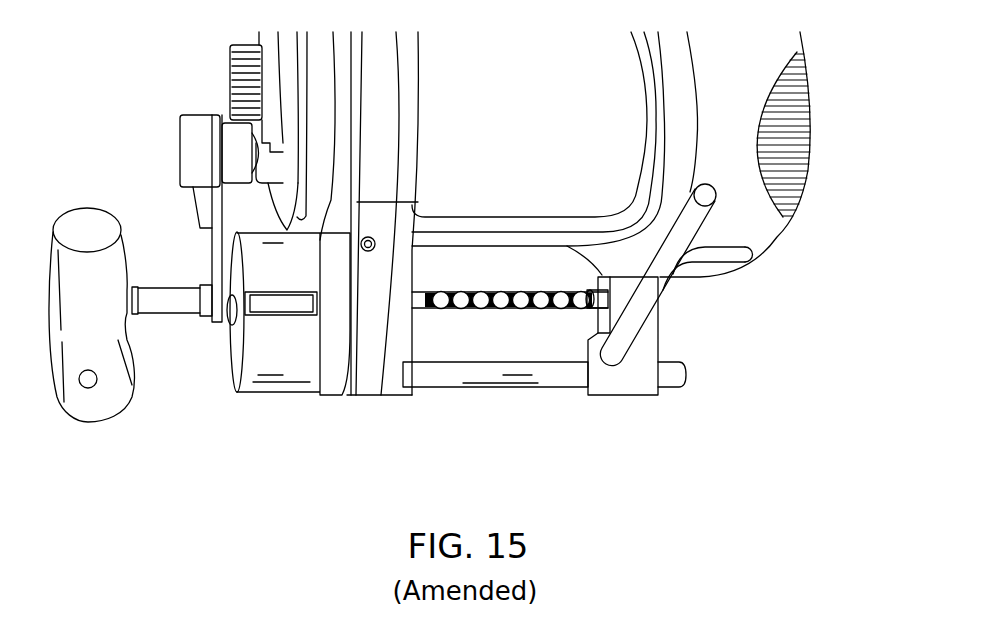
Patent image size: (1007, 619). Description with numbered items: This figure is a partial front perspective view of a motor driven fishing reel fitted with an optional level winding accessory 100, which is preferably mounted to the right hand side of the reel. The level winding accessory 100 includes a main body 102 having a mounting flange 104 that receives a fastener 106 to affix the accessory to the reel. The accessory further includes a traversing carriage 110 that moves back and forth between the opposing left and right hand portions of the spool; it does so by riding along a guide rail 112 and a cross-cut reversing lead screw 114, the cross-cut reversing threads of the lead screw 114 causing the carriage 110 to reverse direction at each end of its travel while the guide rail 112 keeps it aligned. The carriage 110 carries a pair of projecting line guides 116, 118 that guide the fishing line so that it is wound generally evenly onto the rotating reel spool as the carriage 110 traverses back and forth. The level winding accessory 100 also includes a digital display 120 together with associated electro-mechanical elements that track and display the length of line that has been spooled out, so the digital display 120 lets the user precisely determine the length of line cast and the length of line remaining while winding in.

The level winding accessory 100 is at (258, 412).
The main body 102 is at (345, 338).
The mounting flange 104 is at (363, 224).
The fastener 106 is at (360, 244).
The traversing carriage 110 is at (635, 387).
The guide rail 112 is at (443, 375).
The cross-cut reversing lead screw 114 is at (553, 303).
The line guide 116 is at (688, 222).
The line guide 118 is at (650, 298).
The digital display 120 is at (278, 308).